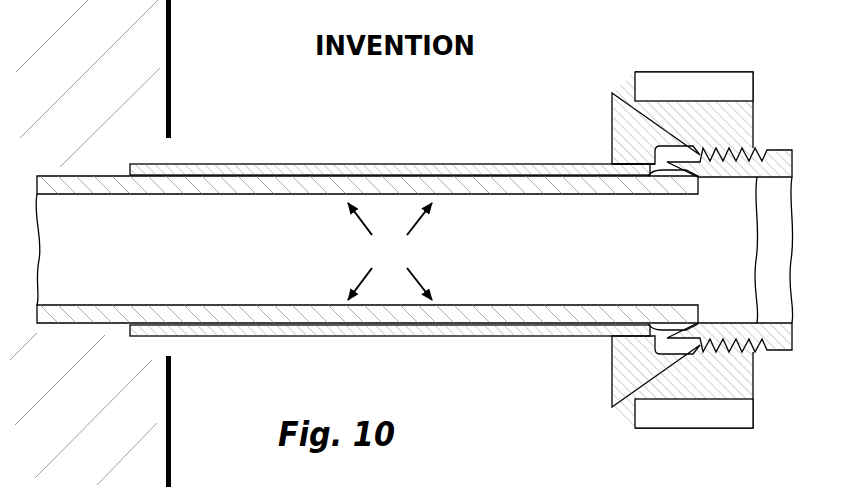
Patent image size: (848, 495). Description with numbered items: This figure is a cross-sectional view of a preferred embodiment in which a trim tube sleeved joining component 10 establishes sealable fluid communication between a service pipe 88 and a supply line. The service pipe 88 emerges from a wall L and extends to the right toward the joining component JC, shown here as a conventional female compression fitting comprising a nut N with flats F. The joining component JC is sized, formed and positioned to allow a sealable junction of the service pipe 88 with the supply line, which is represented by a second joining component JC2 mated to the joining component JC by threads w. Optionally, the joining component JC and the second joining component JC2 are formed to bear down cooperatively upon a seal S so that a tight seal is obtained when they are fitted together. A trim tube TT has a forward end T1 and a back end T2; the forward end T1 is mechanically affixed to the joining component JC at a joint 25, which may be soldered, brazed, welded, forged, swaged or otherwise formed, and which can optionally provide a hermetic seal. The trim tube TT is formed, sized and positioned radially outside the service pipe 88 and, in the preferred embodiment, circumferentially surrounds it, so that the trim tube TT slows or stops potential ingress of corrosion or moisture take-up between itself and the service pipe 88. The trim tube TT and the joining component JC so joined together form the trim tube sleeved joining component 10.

The trim tube sleeved joining component 10 is at (604, 379).
The joint 25 is at (606, 160).
The service pipe 88 is at (390, 251).
The flats F is at (694, 86).
The nut N is at (656, 434).
The joining component JC is at (424, 247).
The second joining component JC2 is at (424, 247).
The wall L is at (89, 243).
The seal S is at (671, 327).
The threads w is at (737, 344).
The forward end T1 is at (546, 161).
The back end T2 is at (210, 161).
The trim tube TT is at (375, 164).